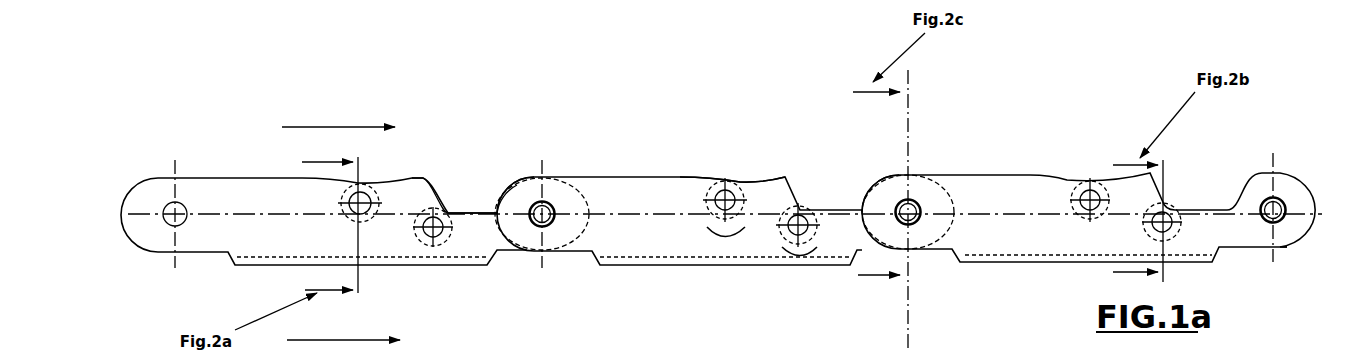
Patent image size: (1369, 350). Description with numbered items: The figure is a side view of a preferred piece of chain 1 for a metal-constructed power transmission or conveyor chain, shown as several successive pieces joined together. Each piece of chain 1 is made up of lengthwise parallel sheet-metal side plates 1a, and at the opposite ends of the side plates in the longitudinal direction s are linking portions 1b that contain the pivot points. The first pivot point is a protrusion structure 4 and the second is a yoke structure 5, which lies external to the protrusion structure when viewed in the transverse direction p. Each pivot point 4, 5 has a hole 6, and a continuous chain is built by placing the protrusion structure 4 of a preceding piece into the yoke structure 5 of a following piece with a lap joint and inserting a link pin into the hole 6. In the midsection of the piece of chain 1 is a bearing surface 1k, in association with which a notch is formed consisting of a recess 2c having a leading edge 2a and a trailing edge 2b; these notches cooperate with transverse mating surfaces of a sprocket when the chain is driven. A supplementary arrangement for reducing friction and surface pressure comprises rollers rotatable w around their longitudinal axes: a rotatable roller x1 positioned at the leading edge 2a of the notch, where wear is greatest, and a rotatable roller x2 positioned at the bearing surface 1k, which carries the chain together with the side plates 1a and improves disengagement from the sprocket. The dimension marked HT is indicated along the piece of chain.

The piece of chain 1 is at (252, 178).
The side plate 1a is at (305, 250).
The linking portion 1b is at (562, 158).
The bearing surface 1k is at (682, 177).
The leading edge 2a is at (430, 183).
The trailing edge 2b is at (515, 182).
The recess 2c is at (468, 203).
The protrusion structure 4 is at (771, 217).
The yoke structure 5 is at (578, 172).
The hole 6 is at (563, 207).
The longitudinal direction s is at (343, 118).
The rotatable roller x1 is at (800, 205).
The rotatable roller x2 is at (738, 185).
The rotation w is at (733, 240).
The pitch HT is at (628, 349).
The transverse direction p is at (720, 349).